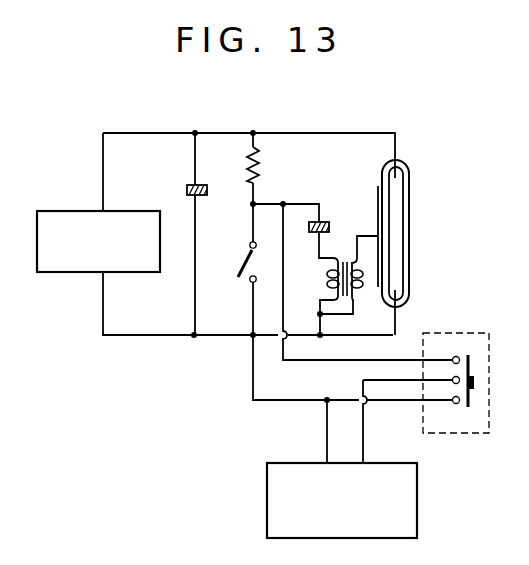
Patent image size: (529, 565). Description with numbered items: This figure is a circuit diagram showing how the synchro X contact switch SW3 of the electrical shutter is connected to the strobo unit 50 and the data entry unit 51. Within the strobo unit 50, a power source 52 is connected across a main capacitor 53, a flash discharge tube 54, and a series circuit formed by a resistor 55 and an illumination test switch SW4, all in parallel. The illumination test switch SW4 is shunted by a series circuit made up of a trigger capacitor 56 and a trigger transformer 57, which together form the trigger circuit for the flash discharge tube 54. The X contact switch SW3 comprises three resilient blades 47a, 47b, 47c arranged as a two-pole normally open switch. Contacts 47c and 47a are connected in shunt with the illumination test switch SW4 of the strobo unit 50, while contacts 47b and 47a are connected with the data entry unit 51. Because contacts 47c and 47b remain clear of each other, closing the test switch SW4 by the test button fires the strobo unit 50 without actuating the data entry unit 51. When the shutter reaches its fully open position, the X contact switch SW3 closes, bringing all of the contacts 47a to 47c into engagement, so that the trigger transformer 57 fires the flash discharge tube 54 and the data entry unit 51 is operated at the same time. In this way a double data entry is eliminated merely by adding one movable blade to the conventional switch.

The strobo unit 50 is at (427, 201).
The data entry unit 51 is at (410, 497).
The power source 52 is at (121, 273).
The main capacitor 53 is at (190, 185).
The flash discharge tube 54 is at (397, 197).
The resistor 55 is at (251, 166).
The trigger capacitor 56 is at (324, 222).
The trigger transformer 57 is at (358, 287).
The resilient blade 47a is at (456, 404).
The resilient blade 47b is at (452, 383).
The resilient blade 47c is at (453, 358).
The X contact switch SW3 is at (436, 366).
The illumination test switch SW4 is at (245, 263).